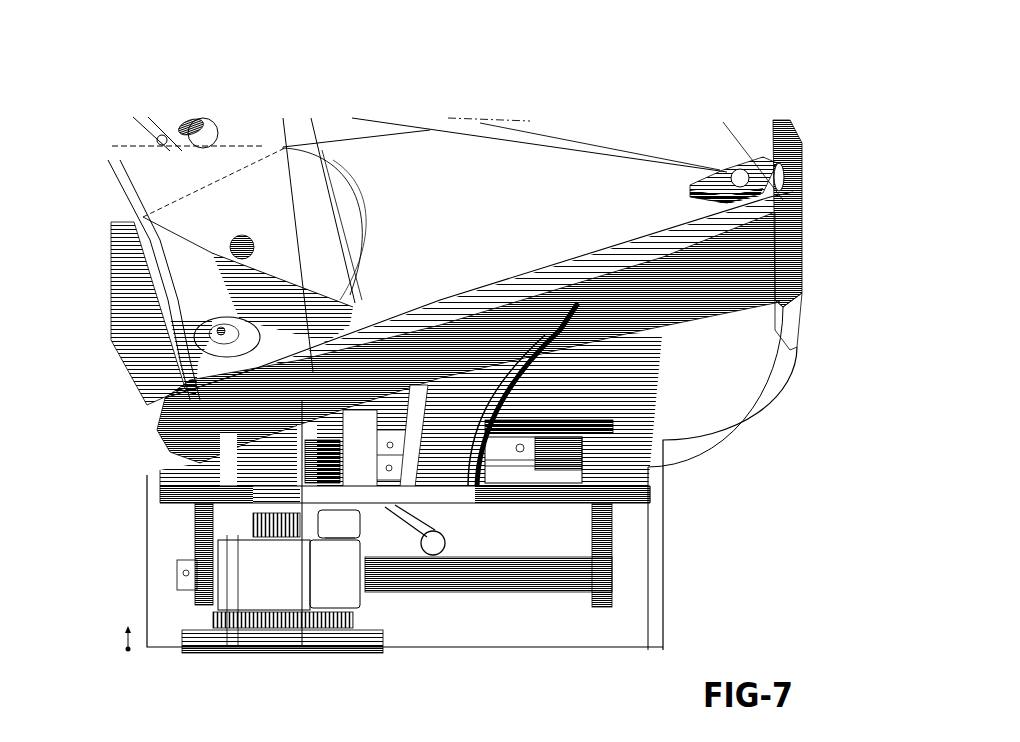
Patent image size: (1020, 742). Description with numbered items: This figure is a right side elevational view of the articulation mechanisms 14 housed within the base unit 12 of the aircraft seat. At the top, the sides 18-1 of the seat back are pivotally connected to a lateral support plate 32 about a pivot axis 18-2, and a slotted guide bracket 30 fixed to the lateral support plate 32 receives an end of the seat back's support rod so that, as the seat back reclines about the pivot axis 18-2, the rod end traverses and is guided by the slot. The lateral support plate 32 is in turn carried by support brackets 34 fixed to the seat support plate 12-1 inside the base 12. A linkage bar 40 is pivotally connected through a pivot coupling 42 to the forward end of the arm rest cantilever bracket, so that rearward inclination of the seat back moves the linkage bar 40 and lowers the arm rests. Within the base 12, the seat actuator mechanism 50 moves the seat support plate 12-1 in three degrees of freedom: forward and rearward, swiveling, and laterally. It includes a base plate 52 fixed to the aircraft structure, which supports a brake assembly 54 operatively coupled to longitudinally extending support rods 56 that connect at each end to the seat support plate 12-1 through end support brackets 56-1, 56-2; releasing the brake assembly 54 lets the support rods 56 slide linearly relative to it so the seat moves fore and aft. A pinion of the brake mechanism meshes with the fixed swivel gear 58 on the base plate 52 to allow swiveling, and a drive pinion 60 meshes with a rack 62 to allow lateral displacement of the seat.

The base unit 12 is at (124, 540).
The seat support plate 12-1 is at (627, 485).
The articulation mechanisms 14 is at (570, 408).
The sides of the seat back 18-1 is at (193, 184).
The pivot axis 18-2 is at (243, 247).
The slotted guide bracket 30 is at (192, 262).
The lateral support plate 32 is at (281, 294).
The support brackets 34 is at (240, 347).
The linkage bar 40 is at (545, 143).
The pivot coupling 42 is at (745, 163).
The seat actuator mechanism 50 is at (432, 617).
The base plate 52 is at (258, 655).
The brake assembly 54 is at (285, 584).
The support rods 56 is at (525, 582).
The shaft support post 56-1 is at (604, 531).
The shaft support post 56-2 is at (205, 553).
The swivel gear 58 is at (313, 617).
The drive pinion 60 is at (267, 521).
The rack 62 is at (353, 528).